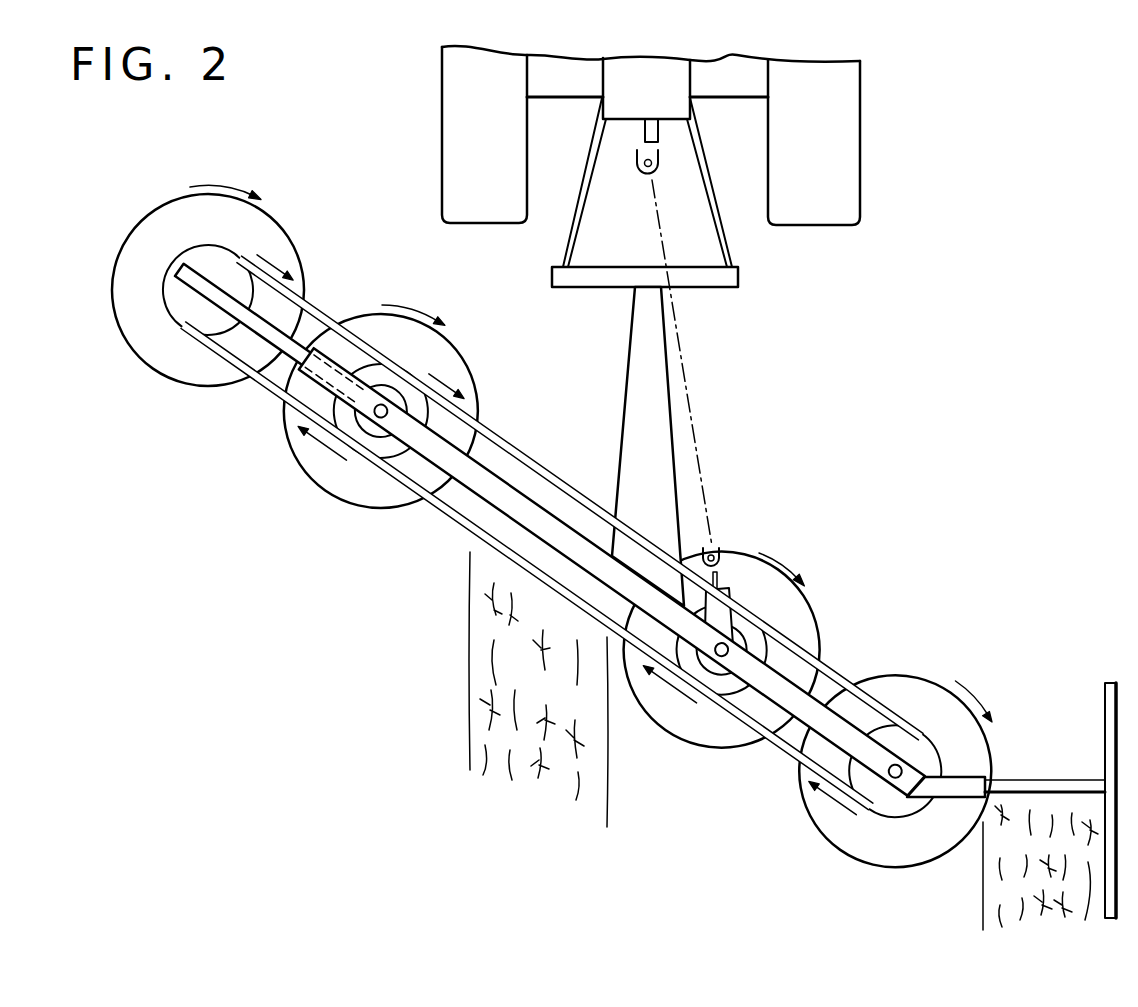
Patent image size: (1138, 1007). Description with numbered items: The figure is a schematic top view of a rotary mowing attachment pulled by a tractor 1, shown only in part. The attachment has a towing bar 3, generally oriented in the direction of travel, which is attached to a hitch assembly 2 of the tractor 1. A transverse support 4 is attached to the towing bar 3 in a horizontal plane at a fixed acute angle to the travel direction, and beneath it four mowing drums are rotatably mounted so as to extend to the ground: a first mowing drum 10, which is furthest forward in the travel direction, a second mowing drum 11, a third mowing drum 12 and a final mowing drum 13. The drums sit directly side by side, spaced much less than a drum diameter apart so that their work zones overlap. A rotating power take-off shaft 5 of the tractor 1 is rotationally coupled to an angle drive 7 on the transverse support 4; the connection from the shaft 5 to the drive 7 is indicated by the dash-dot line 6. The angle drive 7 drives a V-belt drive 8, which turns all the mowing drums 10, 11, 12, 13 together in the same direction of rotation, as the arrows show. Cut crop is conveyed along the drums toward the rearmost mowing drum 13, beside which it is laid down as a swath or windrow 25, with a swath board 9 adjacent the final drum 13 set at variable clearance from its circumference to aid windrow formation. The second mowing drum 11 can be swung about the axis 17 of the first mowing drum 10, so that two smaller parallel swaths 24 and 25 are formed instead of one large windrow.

The tractor 1 is at (735, 65).
The hitch assembly 2 is at (587, 275).
The towing bar 3 is at (630, 378).
The transverse support 4 is at (488, 488).
The power take-off shaft 5 is at (660, 162).
The pivot axis line 6 is at (689, 393).
The angle drive 7 is at (742, 633).
The V-belt drive 8 is at (833, 673).
The swath board 9 is at (1105, 688).
The first mowing drum 10 is at (308, 463).
The second mowing drum 11 is at (193, 372).
The third mowing drum 12 is at (722, 735).
The final mowing drum 13 is at (893, 848).
The axis of the first mowing drum 17 is at (388, 404).
The second swath 24 is at (475, 690).
The swath 25 is at (1003, 885).